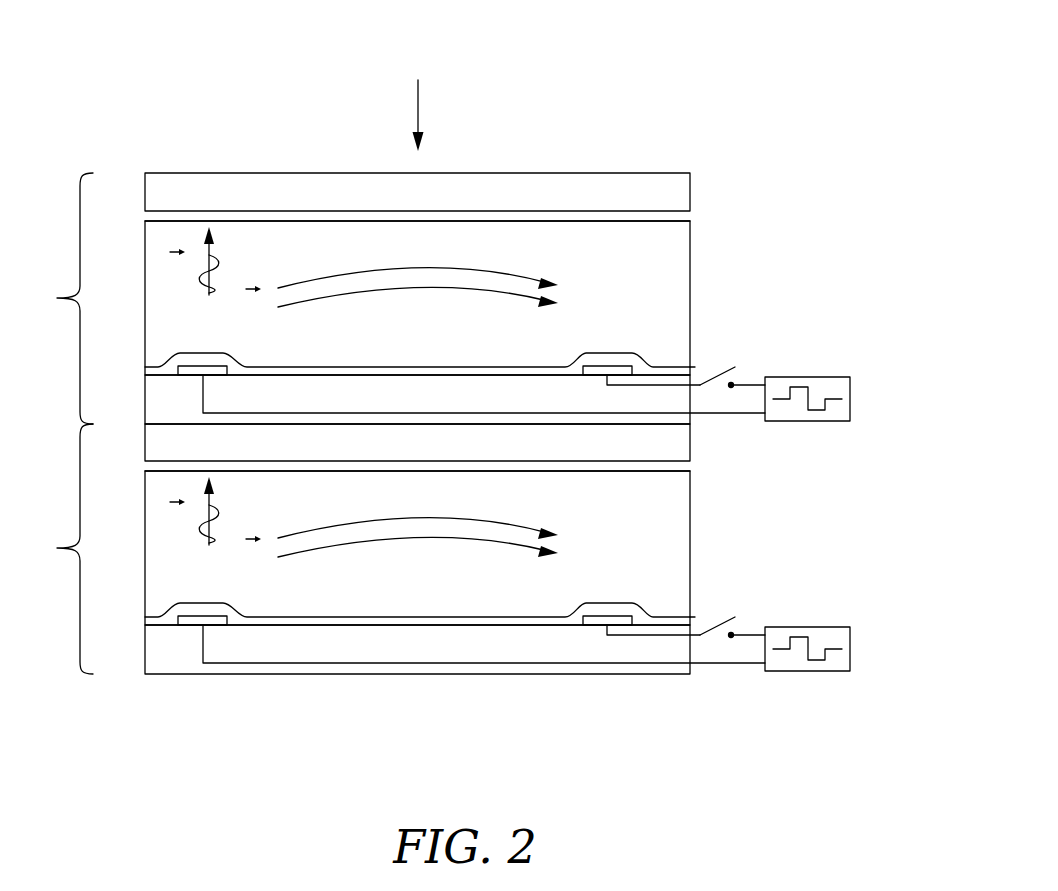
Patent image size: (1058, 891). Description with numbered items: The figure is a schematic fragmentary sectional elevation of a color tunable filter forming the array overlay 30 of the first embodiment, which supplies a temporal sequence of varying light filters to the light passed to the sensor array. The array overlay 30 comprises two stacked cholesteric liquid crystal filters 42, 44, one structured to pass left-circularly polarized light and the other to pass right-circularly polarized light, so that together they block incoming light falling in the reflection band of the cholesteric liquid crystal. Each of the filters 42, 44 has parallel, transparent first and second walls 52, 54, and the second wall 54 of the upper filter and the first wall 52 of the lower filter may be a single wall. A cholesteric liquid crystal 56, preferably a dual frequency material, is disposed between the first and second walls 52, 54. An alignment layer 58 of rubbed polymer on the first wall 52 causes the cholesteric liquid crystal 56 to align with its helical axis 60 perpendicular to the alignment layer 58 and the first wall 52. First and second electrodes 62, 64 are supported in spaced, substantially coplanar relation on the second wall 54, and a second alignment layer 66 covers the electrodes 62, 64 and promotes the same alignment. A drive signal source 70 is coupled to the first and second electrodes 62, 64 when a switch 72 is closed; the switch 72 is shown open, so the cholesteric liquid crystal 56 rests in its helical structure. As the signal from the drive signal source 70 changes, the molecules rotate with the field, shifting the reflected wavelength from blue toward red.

The array overlay 30 is at (800, 58).
The cholesteric liquid crystal filter 42 is at (56, 298).
The cholesteric liquid crystal filter 44 is at (56, 549).
The first wall 52 is at (692, 193).
The second wall 54 is at (145, 401).
The cholesteric liquid crystal 56 is at (684, 287).
The alignment layer 58 is at (692, 215).
The helical axis 60 is at (437, 115).
The first electrode 62 is at (203, 366).
The second electrode 64 is at (607, 366).
The second alignment layer 66 is at (693, 368).
The drive signal source 70 is at (851, 399).
The switch 72 is at (735, 384).